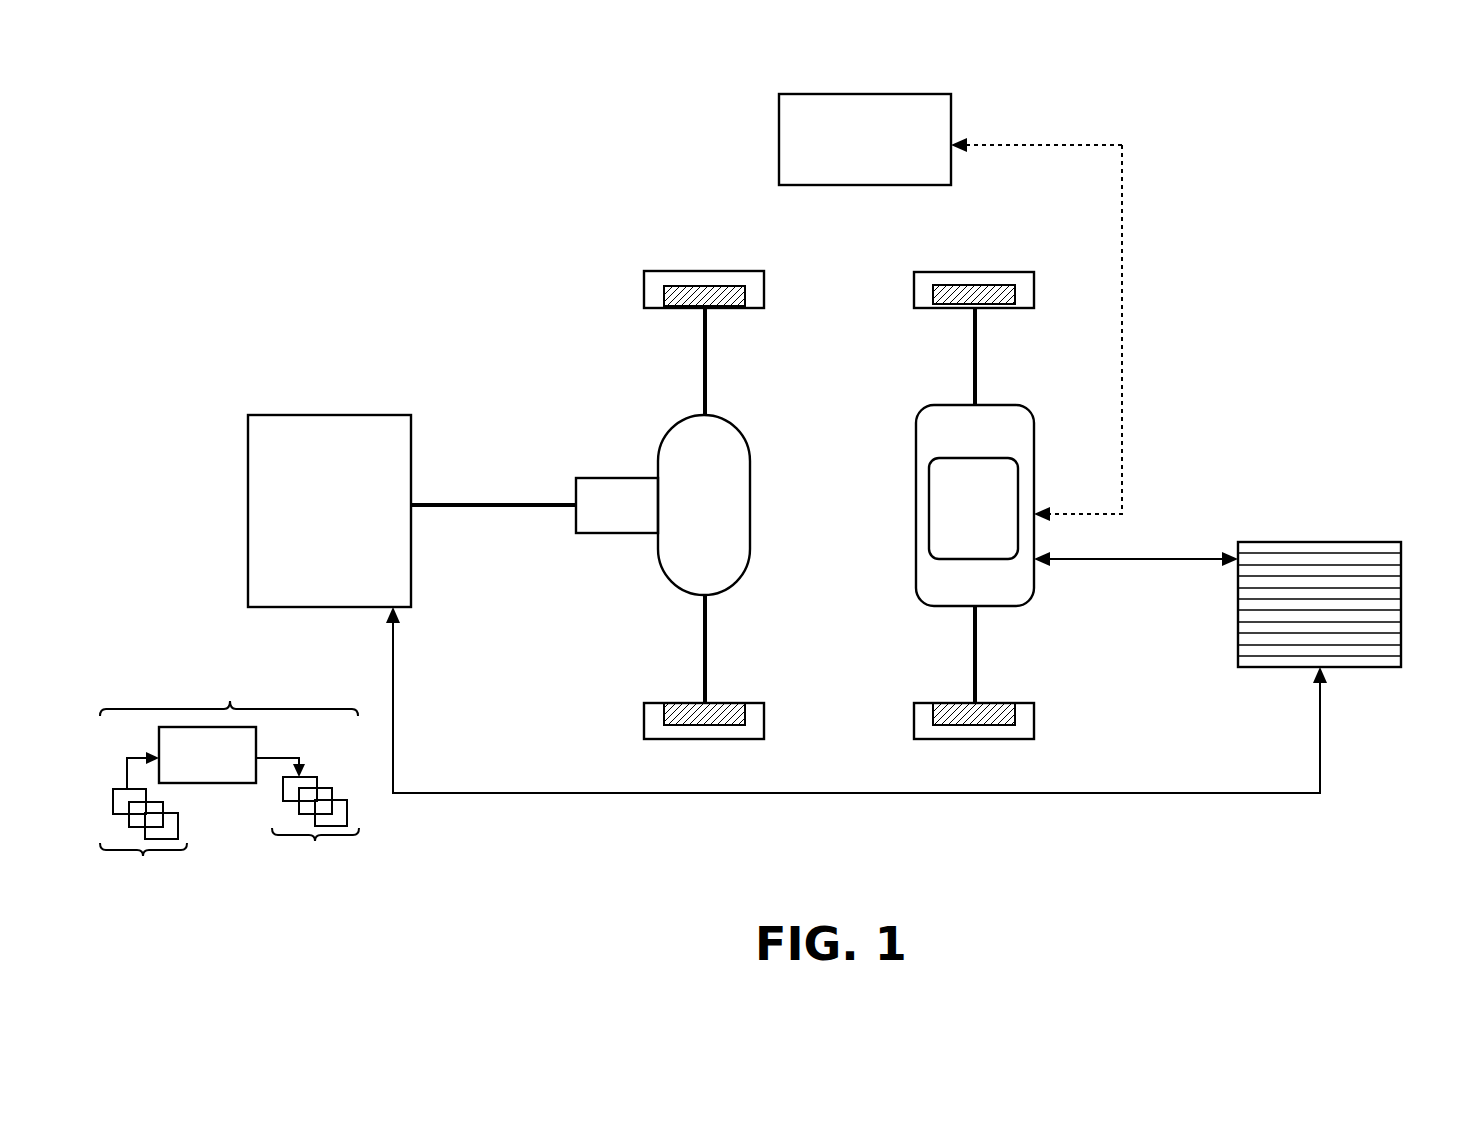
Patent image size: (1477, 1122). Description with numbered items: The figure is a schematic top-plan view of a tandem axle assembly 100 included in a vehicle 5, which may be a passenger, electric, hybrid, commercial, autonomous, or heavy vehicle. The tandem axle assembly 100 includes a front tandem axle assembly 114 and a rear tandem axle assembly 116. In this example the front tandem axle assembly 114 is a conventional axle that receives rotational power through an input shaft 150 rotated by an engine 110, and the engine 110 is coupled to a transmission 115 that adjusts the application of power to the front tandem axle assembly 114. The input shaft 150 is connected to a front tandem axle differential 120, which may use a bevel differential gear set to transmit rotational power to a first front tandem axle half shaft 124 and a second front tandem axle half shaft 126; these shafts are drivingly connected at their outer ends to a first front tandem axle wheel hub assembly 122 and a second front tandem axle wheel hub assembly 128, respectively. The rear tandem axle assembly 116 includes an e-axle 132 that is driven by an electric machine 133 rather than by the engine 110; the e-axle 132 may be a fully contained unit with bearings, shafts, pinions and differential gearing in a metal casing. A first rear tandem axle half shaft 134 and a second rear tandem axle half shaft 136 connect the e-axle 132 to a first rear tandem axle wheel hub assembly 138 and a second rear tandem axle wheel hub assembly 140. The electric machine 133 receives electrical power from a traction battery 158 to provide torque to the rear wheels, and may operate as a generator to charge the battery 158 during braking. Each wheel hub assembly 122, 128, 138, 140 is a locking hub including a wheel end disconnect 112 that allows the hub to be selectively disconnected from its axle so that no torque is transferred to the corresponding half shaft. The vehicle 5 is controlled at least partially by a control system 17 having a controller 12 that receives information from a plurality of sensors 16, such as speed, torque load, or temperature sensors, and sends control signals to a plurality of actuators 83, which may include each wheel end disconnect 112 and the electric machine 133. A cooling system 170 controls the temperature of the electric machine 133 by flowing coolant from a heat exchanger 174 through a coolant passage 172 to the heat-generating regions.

The vehicle 5 is at (199, 66).
The tandem axle assembly 100 is at (407, 262).
The engine 110 is at (305, 415).
The wheel end disconnect 112 is at (745, 297).
The front tandem axle assembly 114 is at (606, 358).
The transmission 115 is at (617, 505).
The rear tandem axle assembly 116 is at (901, 358).
The front tandem axle differential 120 is at (750, 452).
The first front tandem axle wheel hub assembly 122 is at (676, 739).
The first front tandem axle half shaft 124 is at (706, 625).
The second front tandem axle half shaft 126 is at (706, 360).
The second front tandem axle wheel hub assembly 128 is at (709, 271).
The e-axle 132 is at (1035, 432).
The electric machine 133 is at (973, 508).
The first rear tandem axle half shaft 134 is at (977, 635).
The second rear tandem axle half shaft 136 is at (977, 355).
The first rear tandem axle wheel hub assembly 138 is at (955, 739).
The second rear tandem axle wheel hub assembly 140 is at (985, 272).
The input shaft 150 is at (482, 505).
The traction battery 158 is at (865, 139).
The cooling system 170 is at (1332, 620).
The coolant passage 172 is at (1078, 559).
The heat exchanger 174 is at (1238, 613).
The control system 17 is at (229, 787).
The controller 12 is at (207, 755).
The sensors 16 is at (143, 829).
The actuators 83 is at (307, 821).